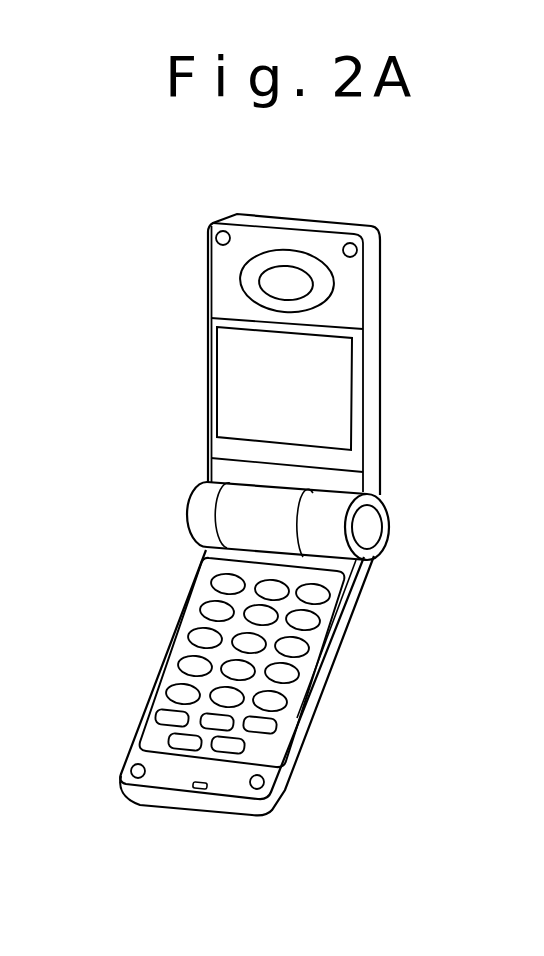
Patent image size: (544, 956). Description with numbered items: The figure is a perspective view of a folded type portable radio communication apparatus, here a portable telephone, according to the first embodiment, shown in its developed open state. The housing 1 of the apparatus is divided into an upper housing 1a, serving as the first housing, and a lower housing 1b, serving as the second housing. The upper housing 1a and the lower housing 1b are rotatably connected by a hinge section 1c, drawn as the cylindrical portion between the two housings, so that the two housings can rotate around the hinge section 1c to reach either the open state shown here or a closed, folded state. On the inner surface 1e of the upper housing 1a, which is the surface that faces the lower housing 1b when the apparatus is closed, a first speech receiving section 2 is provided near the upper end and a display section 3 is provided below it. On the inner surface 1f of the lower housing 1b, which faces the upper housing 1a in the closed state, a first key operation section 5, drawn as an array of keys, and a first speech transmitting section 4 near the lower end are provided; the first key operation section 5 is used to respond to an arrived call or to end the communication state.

The housing 1 is at (300, 222).
The upper housing 1a is at (374, 292).
The lower housing 1b is at (282, 781).
The hinge section 1c is at (369, 527).
The inner surface of the upper housing 1e is at (330, 242).
The inner surface of the lower housing 1f is at (236, 789).
The first speech receiving section 2 is at (247, 283).
The display section 3 is at (233, 405).
The first speech transmitting section 4 is at (198, 790).
The first key operation section 5 is at (280, 717).